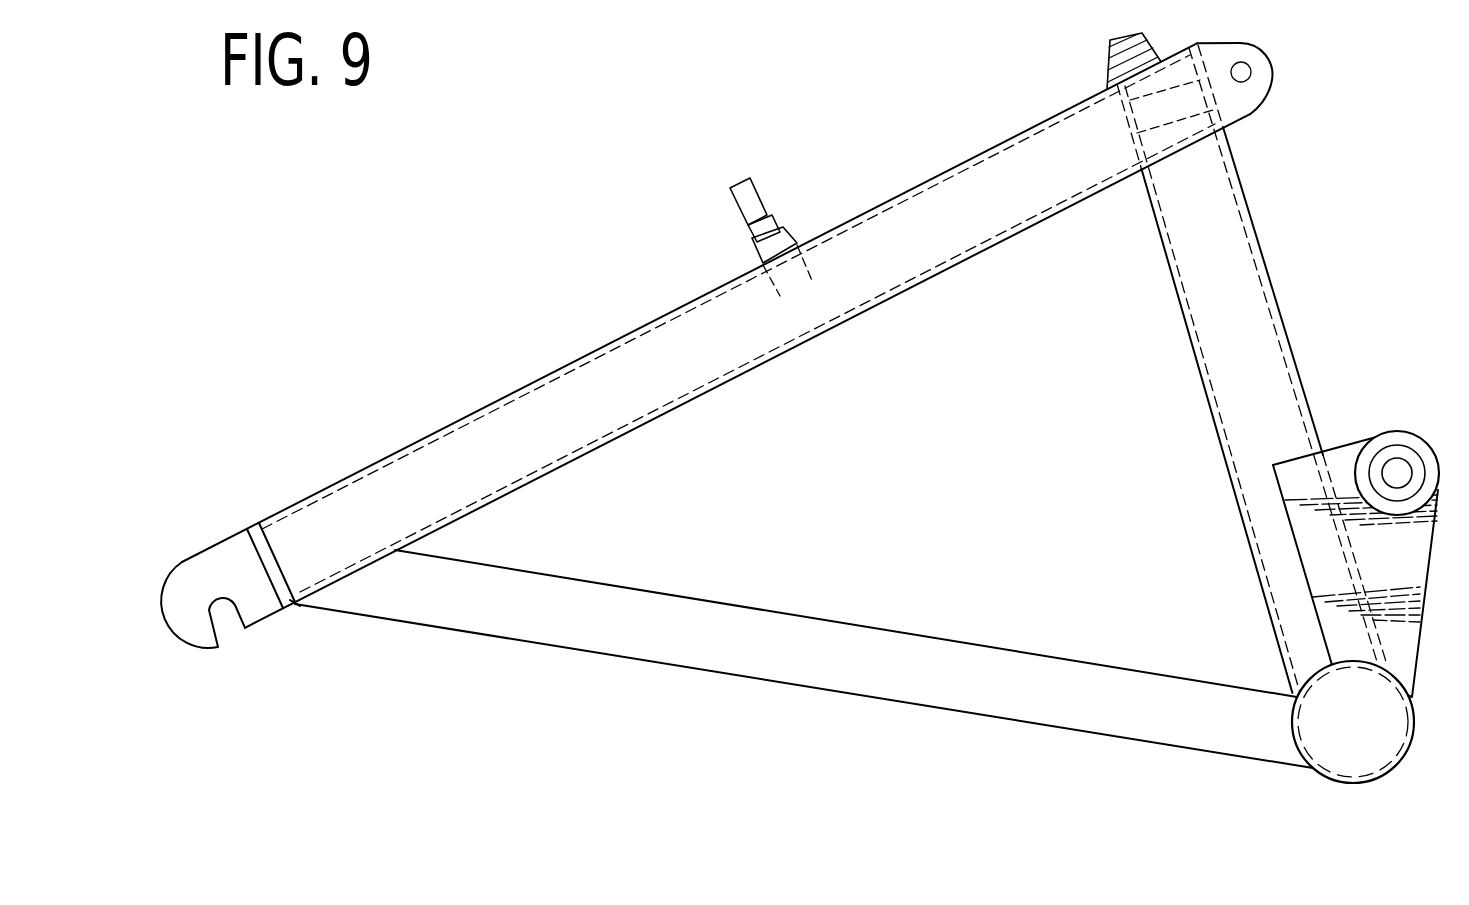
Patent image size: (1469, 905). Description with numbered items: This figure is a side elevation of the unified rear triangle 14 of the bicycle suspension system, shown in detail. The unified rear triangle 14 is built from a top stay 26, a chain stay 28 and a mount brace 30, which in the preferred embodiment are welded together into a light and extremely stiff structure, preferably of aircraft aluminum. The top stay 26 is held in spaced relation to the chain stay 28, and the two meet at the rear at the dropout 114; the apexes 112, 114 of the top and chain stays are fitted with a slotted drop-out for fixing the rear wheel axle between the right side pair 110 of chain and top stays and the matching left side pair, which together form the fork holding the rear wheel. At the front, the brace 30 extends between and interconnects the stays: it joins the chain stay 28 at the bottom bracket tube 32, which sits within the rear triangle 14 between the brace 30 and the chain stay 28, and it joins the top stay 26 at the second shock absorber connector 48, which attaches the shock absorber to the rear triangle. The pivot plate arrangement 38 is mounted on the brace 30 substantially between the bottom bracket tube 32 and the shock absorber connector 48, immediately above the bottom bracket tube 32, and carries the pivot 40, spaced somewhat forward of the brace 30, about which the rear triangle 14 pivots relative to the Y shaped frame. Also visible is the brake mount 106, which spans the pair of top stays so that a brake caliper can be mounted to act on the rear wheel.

The unified rear triangle 14 is at (812, 393).
The top stay 26 is at (678, 343).
The chain stay 28 is at (898, 680).
The mount brace 30 is at (1252, 278).
The bottom bracket tube 32 is at (1372, 736).
The pivot plate arrangement 38 is at (1408, 632).
The pivot 40 is at (1398, 470).
The second shock absorber connector 48 is at (1228, 43).
The brake mount 106 is at (758, 195).
The right side pair of chain and top stays 110 is at (320, 624).
The apex of the top stay 112 is at (261, 537).
The dropout 114 is at (292, 608).